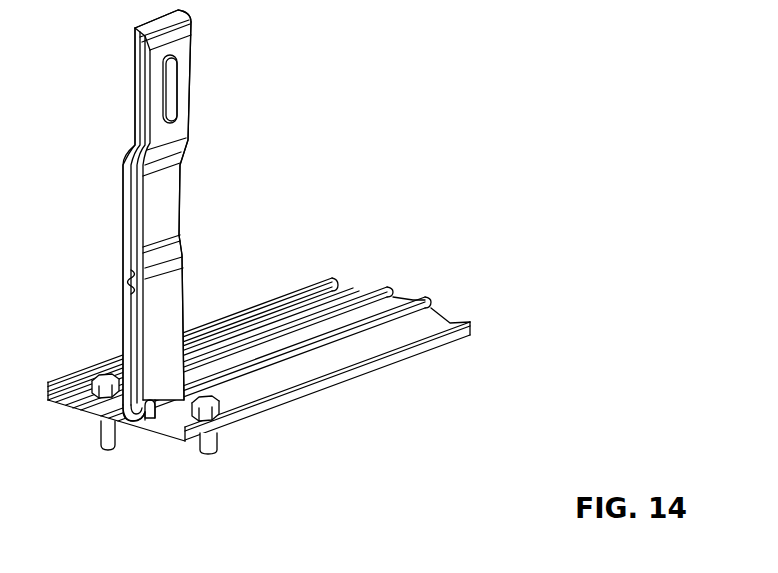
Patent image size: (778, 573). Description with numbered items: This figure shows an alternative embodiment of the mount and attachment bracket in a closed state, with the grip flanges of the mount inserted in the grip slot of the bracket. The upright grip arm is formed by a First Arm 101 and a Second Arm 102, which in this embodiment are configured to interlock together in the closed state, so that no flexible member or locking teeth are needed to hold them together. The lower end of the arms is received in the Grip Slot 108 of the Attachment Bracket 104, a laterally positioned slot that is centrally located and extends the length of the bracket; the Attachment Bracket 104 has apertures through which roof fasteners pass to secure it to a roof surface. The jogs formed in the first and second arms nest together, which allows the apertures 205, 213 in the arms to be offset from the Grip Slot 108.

The First Arm 101 is at (168, 215).
The Second Arm 102 is at (114, 184).
The Attachment Bracket 104 is at (342, 395).
The Grip Slot 108 is at (123, 437).
The aperture 205 is at (185, 63).
The aperture 213 is at (125, 84).